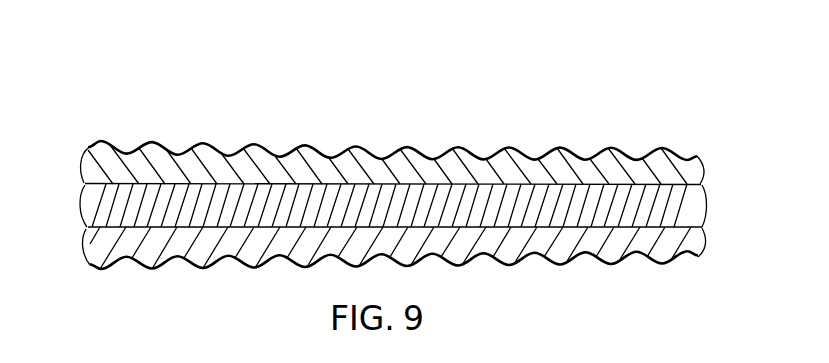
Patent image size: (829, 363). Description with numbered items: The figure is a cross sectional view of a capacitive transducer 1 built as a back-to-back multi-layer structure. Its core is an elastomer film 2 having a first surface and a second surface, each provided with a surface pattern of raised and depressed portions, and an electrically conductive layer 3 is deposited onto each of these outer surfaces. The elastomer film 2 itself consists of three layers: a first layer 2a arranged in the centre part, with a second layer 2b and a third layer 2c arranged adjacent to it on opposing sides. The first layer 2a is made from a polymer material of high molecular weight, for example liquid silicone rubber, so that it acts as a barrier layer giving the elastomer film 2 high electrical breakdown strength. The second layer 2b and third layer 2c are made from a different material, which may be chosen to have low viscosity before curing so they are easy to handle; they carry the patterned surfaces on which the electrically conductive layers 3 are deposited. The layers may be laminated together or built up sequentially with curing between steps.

The capacitive transducer 1 is at (592, 70).
The elastomer film 2 is at (713, 158).
The first layer 2a is at (110, 206).
The second layer 2b is at (95, 158).
The third layer 2c is at (110, 250).
The electrically conductive layer 3 is at (520, 150).